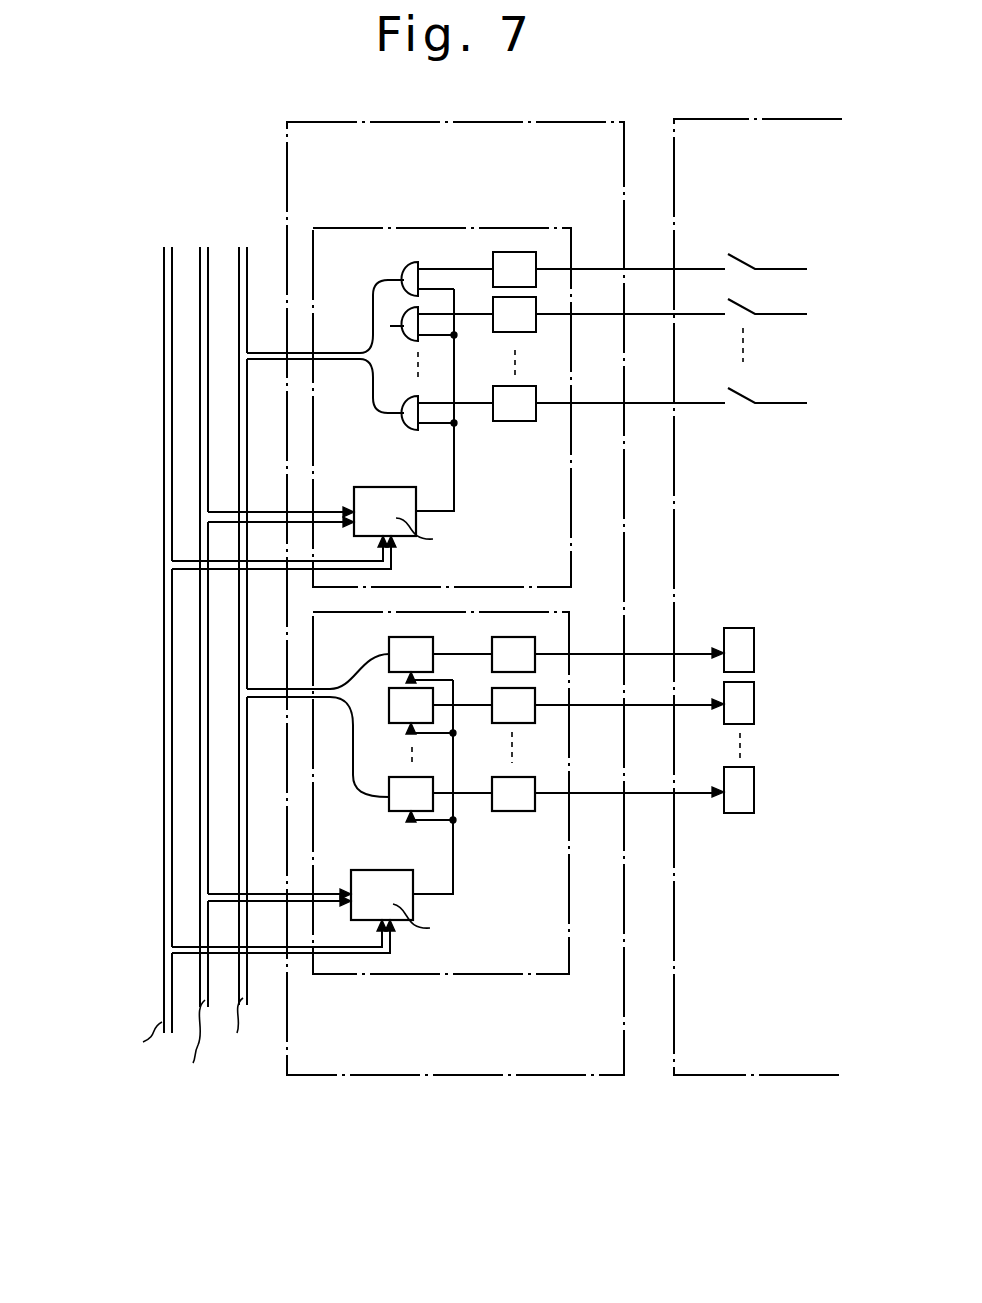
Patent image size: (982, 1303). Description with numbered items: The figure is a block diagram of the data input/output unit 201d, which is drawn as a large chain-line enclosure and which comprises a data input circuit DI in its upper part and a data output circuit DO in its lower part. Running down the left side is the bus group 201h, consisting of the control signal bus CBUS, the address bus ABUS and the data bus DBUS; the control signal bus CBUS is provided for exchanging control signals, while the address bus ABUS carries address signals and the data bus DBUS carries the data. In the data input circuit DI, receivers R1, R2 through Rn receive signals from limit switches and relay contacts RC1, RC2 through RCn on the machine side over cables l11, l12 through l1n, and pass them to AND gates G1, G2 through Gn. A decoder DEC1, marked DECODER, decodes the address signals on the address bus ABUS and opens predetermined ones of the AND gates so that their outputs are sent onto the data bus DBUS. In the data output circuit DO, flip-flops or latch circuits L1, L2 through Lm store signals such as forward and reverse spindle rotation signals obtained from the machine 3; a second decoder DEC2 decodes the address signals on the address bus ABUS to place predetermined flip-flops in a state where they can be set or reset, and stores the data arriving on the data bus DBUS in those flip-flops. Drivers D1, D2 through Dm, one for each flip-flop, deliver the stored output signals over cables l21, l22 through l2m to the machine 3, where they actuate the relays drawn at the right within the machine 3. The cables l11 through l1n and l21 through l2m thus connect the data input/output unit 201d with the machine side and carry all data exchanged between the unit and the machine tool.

The data input/output unit 201d is at (402, 1076).
The bus lines 201h is at (270, 219).
The machine 3 is at (752, 1066).
The data input circuit DI is at (465, 229).
The data output circuit DO is at (452, 973).
The control signal bus CBUS is at (131, 1047).
The address bus ABUS is at (198, 1049).
The data bus DBUS is at (244, 1030).
The AND gate G1 is at (416, 262).
The AND gate G2 is at (416, 307).
The AND gate Gn is at (440, 385).
The receiver R1 is at (609, 269).
The receiver R2 is at (609, 314).
The receiver Rn is at (609, 403).
The relay contact RC1 is at (767, 255).
The relay contact RC2 is at (767, 299).
The relay contact RCn is at (767, 387).
The cable l11 is at (641, 266).
The cable l12 is at (639, 313).
The cable l1n is at (637, 402).
The cable l21 is at (639, 652).
The cable l22 is at (637, 704).
The cable l2m is at (637, 792).
The decoder DEC1 is at (381, 488).
The decoder DEC2 is at (373, 872).
The decoder DECODER is at (461, 728).
The flip-flop L1 is at (440, 660).
The flip-flop L2 is at (440, 712).
The flip-flop Lm is at (440, 800).
The driver D1 is at (608, 654).
The driver D2 is at (608, 705).
The driver Dm is at (608, 794).